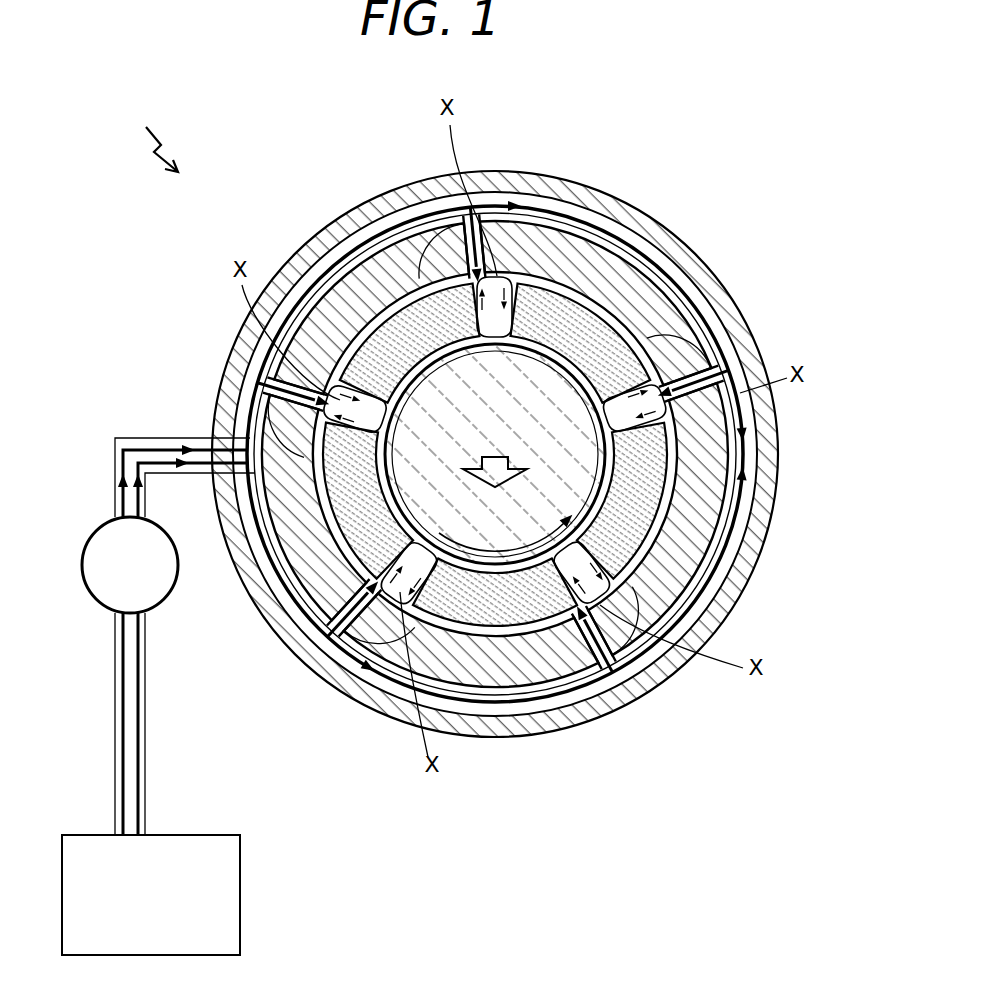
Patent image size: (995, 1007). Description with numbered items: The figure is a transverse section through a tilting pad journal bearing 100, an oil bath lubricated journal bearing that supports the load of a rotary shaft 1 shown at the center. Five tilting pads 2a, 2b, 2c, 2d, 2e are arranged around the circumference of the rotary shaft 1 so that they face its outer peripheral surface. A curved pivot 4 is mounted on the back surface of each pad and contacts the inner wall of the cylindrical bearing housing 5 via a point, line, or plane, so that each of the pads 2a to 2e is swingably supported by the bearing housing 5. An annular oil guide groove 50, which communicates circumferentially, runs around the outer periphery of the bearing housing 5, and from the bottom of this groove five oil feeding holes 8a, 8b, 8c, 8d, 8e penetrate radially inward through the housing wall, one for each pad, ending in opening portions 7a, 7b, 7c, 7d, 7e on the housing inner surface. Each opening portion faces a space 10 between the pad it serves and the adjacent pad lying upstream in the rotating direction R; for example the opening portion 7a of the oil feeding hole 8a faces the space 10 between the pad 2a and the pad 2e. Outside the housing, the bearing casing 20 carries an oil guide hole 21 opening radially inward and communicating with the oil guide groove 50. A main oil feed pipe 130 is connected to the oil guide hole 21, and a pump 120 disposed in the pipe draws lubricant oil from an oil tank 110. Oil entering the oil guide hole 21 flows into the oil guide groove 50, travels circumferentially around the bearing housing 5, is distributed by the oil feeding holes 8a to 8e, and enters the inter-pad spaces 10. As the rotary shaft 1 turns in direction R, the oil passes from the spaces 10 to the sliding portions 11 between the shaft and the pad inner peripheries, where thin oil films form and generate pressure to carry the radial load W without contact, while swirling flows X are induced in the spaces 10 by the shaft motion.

The rotary shaft 1 is at (720, 605).
The tilting pad 2a is at (583, 612).
The tilting pad 2b is at (695, 522).
The tilting pad 2c is at (580, 245).
The tilting pad 2d is at (370, 290).
The tilting pad 2e is at (325, 560).
The pivot 4 is at (497, 503).
The bearing housing 5 is at (497, 503).
The opening portion 7a is at (370, 632).
The opening portion 7b is at (625, 640).
The opening portion 7c is at (722, 366).
The opening portion 7d is at (466, 240).
The opening portion 7e is at (285, 405).
The oil feeding hole 8a is at (380, 650).
The oil feeding hole 8b is at (660, 612).
The oil feeding hole 8c is at (708, 352).
The oil feeding hole 8d is at (462, 225).
The oil feeding hole 8e is at (285, 415).
The space 10 is at (545, 300).
The sliding portion 11 is at (540, 612).
The bearing casing 20 is at (779, 468).
The oil guide hole 21 is at (224, 457).
The oil guide groove 50 is at (773, 398).
The tilting pad journal bearing 100 is at (150, 134).
The oil tank 110 is at (242, 897).
The pump 120 is at (95, 532).
The main oil feed pipe 130 is at (115, 700).